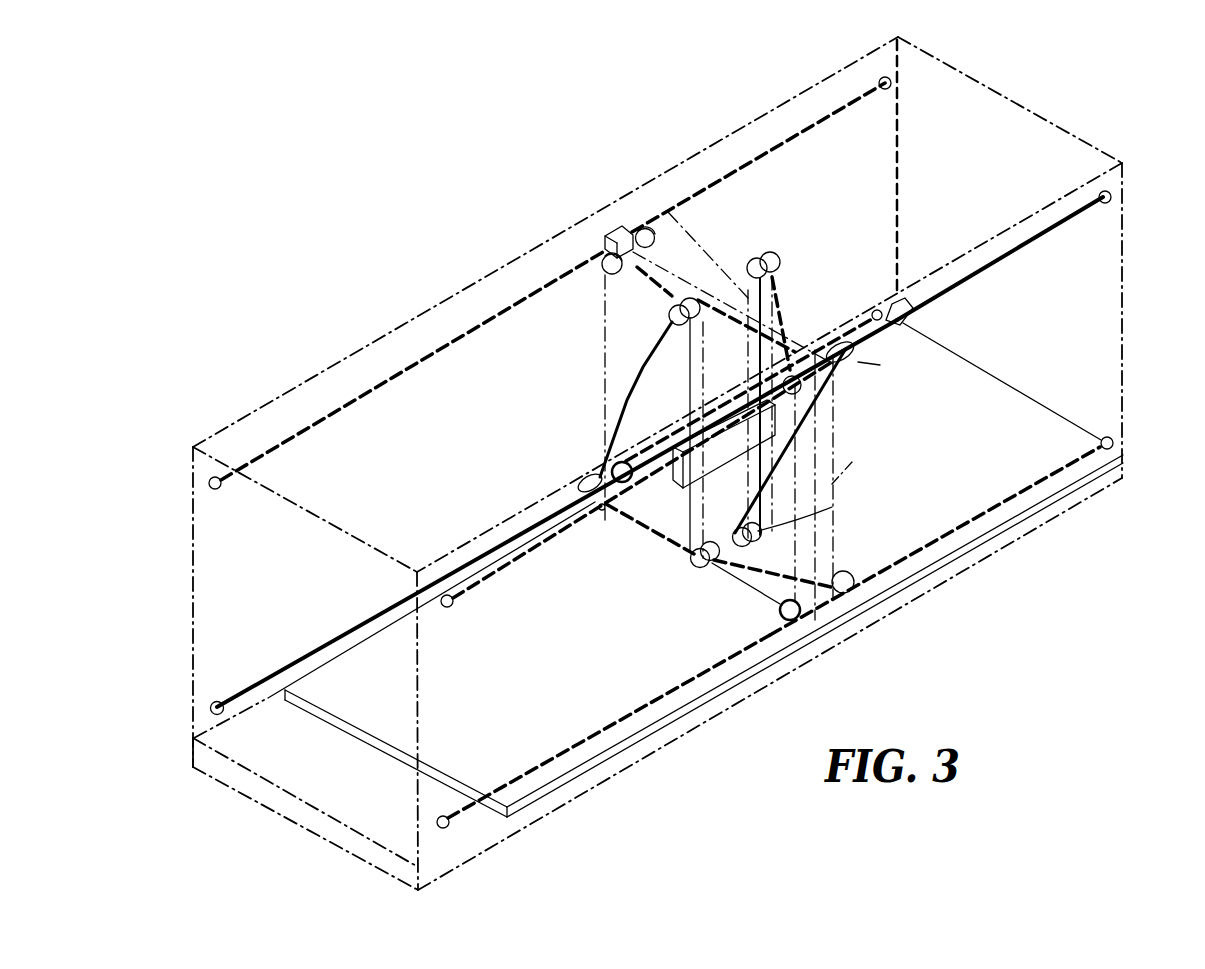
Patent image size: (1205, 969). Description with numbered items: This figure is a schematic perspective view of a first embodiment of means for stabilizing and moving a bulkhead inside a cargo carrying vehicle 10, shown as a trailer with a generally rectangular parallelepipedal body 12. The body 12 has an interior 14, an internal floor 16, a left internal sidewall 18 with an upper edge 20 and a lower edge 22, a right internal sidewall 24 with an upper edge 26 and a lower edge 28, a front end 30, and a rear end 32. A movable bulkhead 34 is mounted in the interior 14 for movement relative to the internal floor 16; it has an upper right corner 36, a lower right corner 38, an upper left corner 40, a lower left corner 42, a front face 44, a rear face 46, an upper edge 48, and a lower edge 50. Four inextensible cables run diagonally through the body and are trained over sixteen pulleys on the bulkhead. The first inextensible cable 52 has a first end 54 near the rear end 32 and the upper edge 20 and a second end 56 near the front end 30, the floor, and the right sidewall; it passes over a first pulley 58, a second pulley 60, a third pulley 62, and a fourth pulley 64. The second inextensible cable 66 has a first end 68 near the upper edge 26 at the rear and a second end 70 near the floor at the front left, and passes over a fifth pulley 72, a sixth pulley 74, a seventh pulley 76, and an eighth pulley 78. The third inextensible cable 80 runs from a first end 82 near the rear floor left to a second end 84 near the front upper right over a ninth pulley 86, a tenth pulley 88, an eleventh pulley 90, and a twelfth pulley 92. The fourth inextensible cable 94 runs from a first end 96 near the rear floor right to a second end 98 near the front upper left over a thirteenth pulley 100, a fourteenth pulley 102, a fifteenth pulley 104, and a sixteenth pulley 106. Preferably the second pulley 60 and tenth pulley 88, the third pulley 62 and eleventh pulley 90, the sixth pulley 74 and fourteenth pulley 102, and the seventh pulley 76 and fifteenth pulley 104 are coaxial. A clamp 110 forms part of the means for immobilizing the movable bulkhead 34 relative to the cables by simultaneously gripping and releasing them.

The cargo carrying vehicle 10 is at (492, 250).
The body 12 is at (769, 367).
The interior 14 is at (377, 747).
The internal floor 16 is at (472, 782).
The left internal sidewall 18 is at (412, 756).
The upper edge 20 is at (525, 505).
The lower edge 22 is at (512, 840).
The right internal sidewall 24 is at (305, 503).
The upper edge 26 is at (297, 385).
The lower edge 28 is at (258, 713).
The front end 30 is at (247, 607).
The rear end 32 is at (1010, 100).
The movable bulkhead 34 is at (722, 246).
The upper right corner 36 is at (612, 226).
The lower right corner 38 is at (602, 511).
The upper left corner 40 is at (880, 366).
The lower left corner 42 is at (868, 624).
The front face 44 is at (666, 530).
The rear face 46 is at (855, 470).
The upper edge 48 is at (708, 255).
The lower edge 50 is at (760, 628).
The first inextensible cable 52 is at (1020, 240).
The first end 54 is at (1112, 200).
The second end 56 is at (220, 700).
The first pulley 58 is at (857, 355).
The second pulley 60 is at (692, 566).
The third pulley 62 is at (680, 335).
The fourth pulley 64 is at (586, 474).
The second inextensible cable 66 is at (805, 142).
The first end 68 is at (892, 86).
The second end 70 is at (437, 818).
The fifth pulley 72 is at (760, 258).
The sixth pulley 74 is at (760, 543).
The seventh pulley 76 is at (782, 262).
The eighth pulley 78 is at (798, 620).
The third inextensible cable 80 is at (1036, 478).
The first end 82 is at (1113, 442).
The second end 84 is at (220, 490).
The ninth pulley 86 is at (848, 572).
The tenth pulley 88 is at (778, 603).
The eleventh pulley 90 is at (718, 322).
The twelfth pulley 92 is at (605, 270).
The fourth inextensible cable 94 is at (874, 309).
The first end 96 is at (913, 310).
The second end 98 is at (450, 607).
The thirteenth pulley 100 is at (616, 462).
The fourteenth pulley 102 is at (832, 507).
The fifteenth pulley 104 is at (657, 238).
The sixteenth pulley 106 is at (803, 390).
The clamp 110 is at (672, 455).